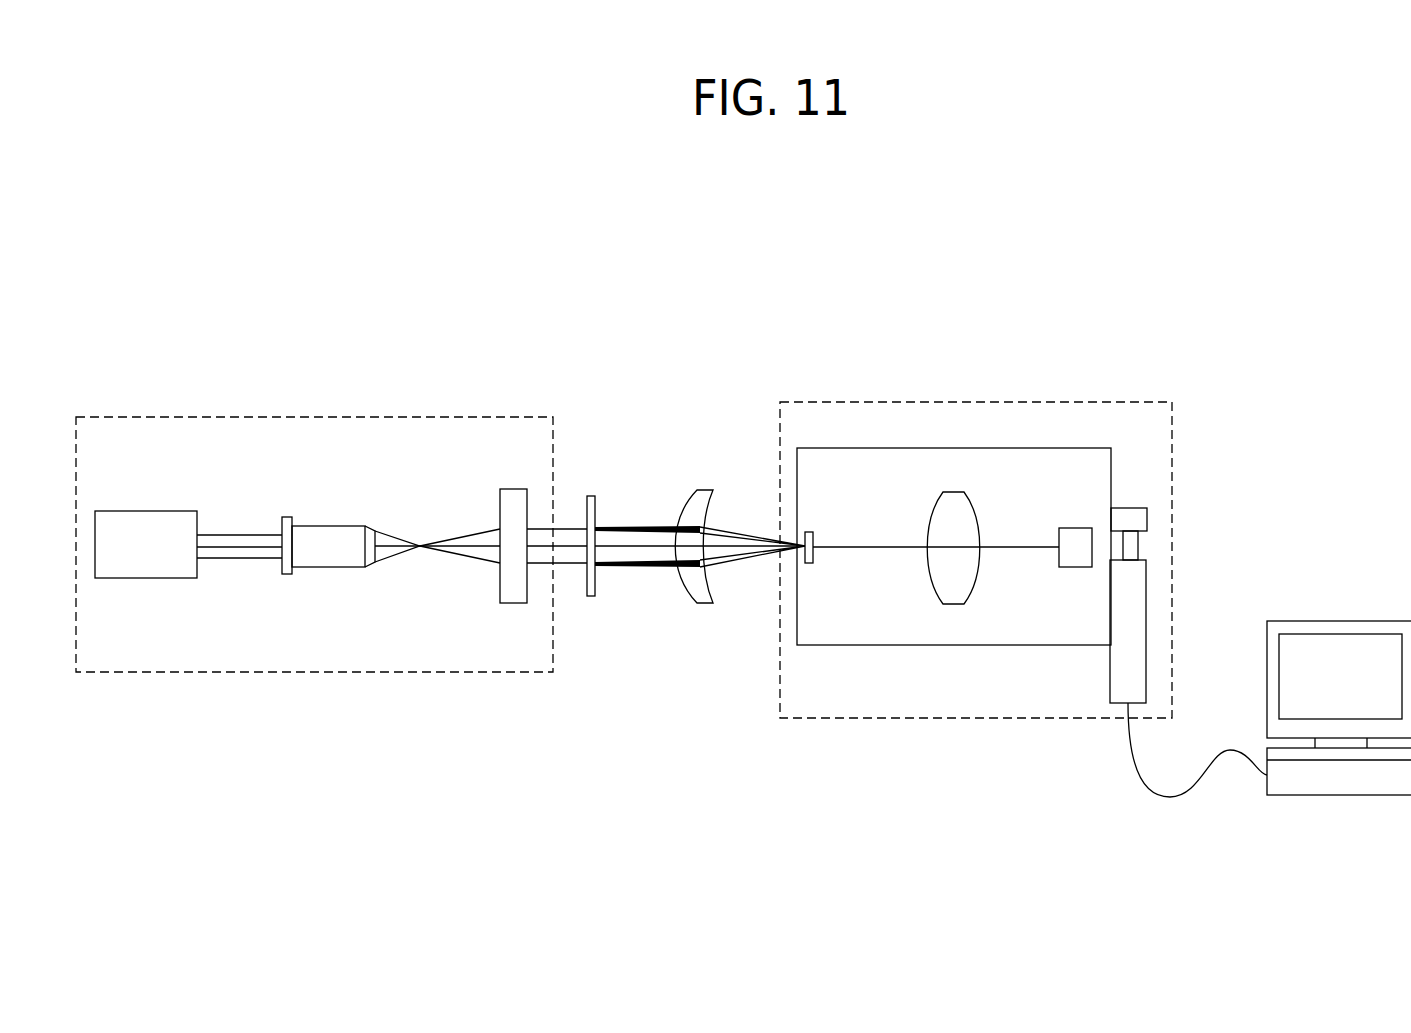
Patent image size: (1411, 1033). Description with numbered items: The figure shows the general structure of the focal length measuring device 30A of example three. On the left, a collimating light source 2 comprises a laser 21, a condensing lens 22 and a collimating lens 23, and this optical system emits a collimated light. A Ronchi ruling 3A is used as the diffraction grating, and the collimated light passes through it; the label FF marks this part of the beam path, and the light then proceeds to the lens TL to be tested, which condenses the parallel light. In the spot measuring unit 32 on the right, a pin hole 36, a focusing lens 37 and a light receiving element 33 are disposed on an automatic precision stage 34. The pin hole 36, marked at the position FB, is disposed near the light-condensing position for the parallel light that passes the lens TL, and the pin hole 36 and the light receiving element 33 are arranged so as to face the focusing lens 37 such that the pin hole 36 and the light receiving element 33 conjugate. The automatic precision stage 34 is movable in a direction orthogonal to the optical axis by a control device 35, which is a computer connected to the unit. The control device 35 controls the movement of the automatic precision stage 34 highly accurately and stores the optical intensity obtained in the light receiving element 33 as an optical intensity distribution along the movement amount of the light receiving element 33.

The collimating light source 2 is at (316, 413).
The laser 21 is at (143, 511).
The condensing lens 22 is at (325, 527).
The collimating lens 23 is at (500, 505).
The focal length measuring device 30A is at (590, 372).
The Ronchi ruling 3A is at (590, 496).
The far field FF is at (590, 621).
The lens to be tested TL is at (699, 525).
The focal plane / fiber FB is at (821, 524).
The spot measuring unit 32 is at (963, 400).
The automatic precision stage 34 is at (1065, 448).
The pin hole 36 is at (782, 577).
The focusing lens 37 is at (933, 593).
The light receiving element 33 is at (1068, 567).
The control device 35 is at (1365, 621).